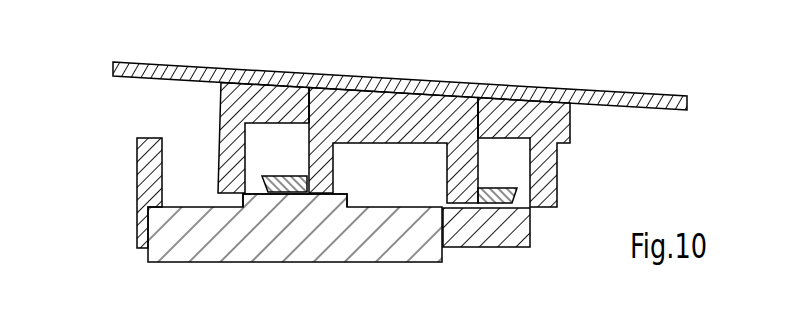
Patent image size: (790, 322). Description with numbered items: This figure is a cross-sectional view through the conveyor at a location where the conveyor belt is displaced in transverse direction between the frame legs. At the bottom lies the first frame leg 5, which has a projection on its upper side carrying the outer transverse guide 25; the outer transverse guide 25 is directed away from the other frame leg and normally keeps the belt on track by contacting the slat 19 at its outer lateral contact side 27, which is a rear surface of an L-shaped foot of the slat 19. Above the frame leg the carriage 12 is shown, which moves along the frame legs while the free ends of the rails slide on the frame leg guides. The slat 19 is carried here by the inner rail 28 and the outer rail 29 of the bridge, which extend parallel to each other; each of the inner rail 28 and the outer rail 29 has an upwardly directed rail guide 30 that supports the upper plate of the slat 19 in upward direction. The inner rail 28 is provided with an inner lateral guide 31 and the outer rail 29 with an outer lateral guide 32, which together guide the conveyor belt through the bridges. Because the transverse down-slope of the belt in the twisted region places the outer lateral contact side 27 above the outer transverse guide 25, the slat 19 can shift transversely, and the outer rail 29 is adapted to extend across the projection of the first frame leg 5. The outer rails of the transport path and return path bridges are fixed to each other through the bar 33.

The first frame leg 5 is at (327, 231).
The carriage 12 is at (478, 240).
The slat 19 is at (413, 100).
The outer transverse guide 25 is at (243, 197).
The outer lateral contact side 27 is at (330, 183).
The inner rail 28 is at (500, 112).
The outer rail 29 is at (247, 100).
The upwardly directed rail guide 30 is at (282, 80).
The inner lateral guide 31 is at (477, 118).
The outer lateral guide 32 is at (313, 112).
The bar 33 is at (142, 169).